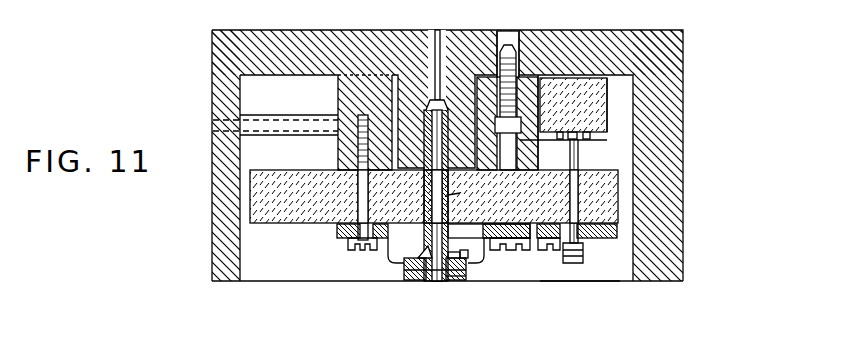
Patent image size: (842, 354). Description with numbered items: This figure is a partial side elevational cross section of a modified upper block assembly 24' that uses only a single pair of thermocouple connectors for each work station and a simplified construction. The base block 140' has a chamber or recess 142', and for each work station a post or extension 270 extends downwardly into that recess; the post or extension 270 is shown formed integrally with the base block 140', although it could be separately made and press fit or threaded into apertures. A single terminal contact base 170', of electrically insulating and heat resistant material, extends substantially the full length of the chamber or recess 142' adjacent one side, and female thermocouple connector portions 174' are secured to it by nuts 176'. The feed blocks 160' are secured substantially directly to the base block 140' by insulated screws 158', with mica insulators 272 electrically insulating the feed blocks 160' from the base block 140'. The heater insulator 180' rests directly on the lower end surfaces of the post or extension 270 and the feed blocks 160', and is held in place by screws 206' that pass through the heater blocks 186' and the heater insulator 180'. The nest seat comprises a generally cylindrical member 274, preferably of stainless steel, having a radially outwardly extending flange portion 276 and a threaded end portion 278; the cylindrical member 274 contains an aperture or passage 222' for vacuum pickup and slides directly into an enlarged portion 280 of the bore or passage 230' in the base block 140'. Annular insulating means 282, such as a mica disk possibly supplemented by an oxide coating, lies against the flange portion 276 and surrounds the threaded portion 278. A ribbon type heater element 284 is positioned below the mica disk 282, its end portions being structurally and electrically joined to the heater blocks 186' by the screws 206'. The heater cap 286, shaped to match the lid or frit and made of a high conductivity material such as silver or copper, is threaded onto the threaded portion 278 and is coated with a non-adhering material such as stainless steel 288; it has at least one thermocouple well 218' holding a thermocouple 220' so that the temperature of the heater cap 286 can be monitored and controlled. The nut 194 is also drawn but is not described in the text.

The upper block assembly 24' is at (471, 155).
The base block 140' is at (473, 269).
The chamber or recess 142' is at (580, 297).
The mica insulators 272 is at (352, 75).
The bore or passage 230' is at (422, 54).
The enlarged portion 280 is at (427, 113).
The insulated screws 158' is at (521, 86).
The post or extension 270 is at (550, 122).
The feed blocks 160' is at (571, 69).
The terminal contact base 170' is at (622, 69).
The nuts 176' is at (622, 132).
The female thermocouple connector portions 174' is at (652, 191).
The nut 194 is at (590, 200).
The aperture or passage 222' is at (391, 177).
The heater insulator 180' is at (492, 196).
The cylindrical member 274 is at (472, 195).
The heater blocks 186' is at (437, 235).
The flange portion 276 is at (489, 237).
The screws 206' is at (416, 252).
The ribbon type heater element 284 is at (400, 265).
The annular insulating means 282 is at (424, 256).
The threaded end portion 278 is at (427, 281).
The heater cap 286 is at (400, 271).
The stainless steel 288 is at (455, 292).
The thermocouple well 218' is at (463, 284).
The thermocouple 220' is at (496, 284).